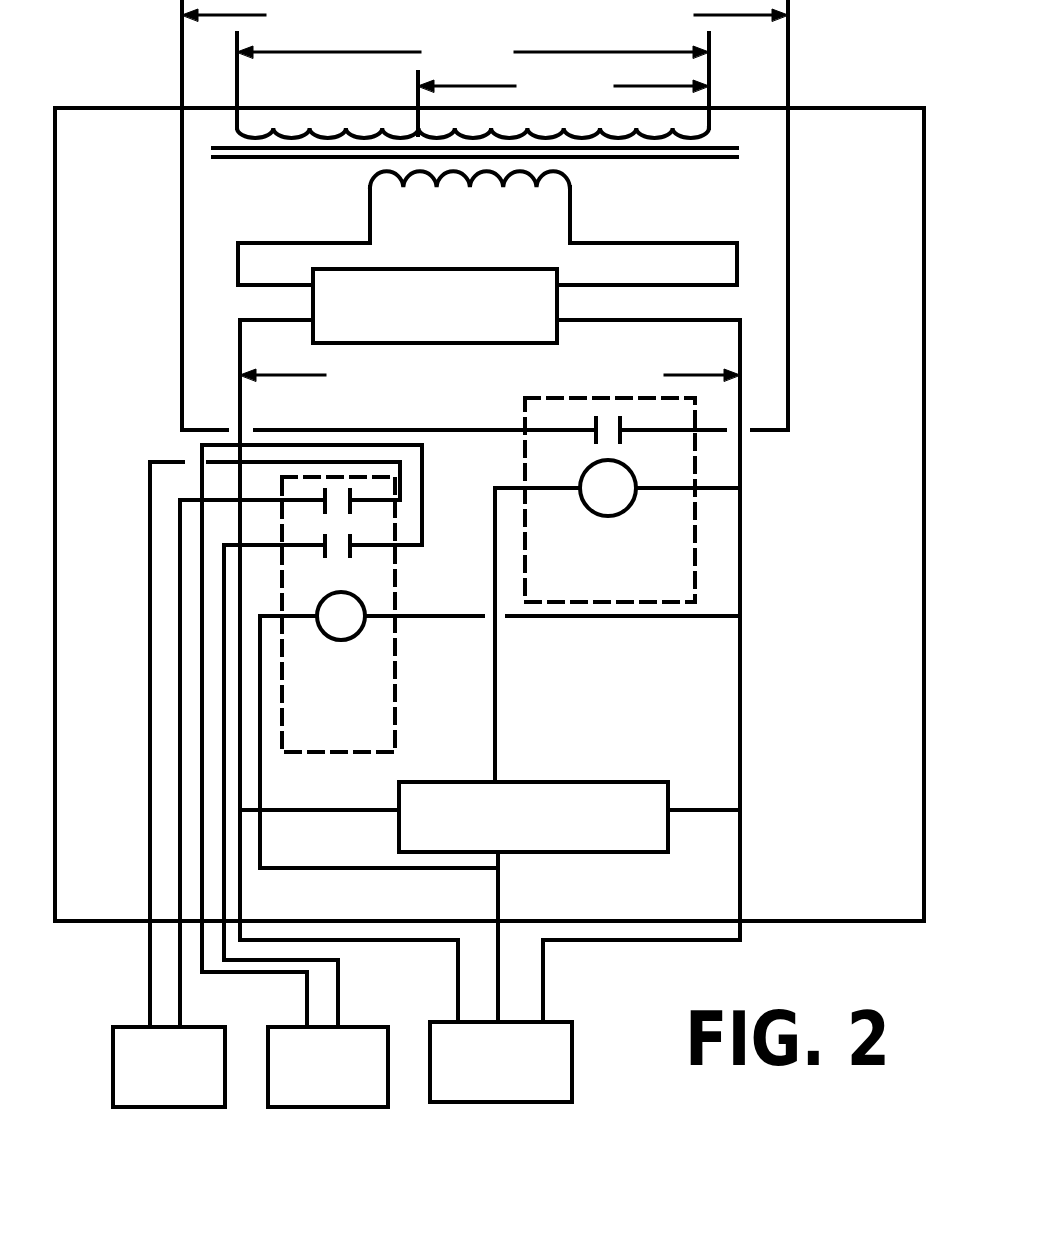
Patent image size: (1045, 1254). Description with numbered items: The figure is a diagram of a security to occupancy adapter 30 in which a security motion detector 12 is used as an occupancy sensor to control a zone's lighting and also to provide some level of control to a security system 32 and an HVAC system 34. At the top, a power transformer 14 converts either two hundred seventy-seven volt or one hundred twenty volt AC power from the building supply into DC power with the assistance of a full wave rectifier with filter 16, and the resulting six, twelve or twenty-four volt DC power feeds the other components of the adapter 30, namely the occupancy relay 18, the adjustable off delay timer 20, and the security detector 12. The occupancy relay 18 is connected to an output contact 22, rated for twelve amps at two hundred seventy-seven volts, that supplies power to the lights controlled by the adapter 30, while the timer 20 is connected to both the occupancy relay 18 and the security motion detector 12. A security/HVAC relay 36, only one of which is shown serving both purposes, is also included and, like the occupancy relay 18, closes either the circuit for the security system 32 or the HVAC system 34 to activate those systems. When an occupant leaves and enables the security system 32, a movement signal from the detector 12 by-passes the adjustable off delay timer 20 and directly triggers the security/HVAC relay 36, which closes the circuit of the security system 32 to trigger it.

The security motion detector 12 is at (523, 1103).
The power transformer 14 is at (680, 163).
The full wave rectifier with filter 16 is at (474, 268).
The occupancy relay 18 is at (697, 567).
The adjustable off delay timer 20 is at (582, 782).
The output contact 22 is at (790, 41).
The adapter 30 is at (100, 923).
The security system 32 is at (333, 1107).
The HVAC system 34 is at (150, 1107).
The security/HVAC relay 36 is at (395, 672).